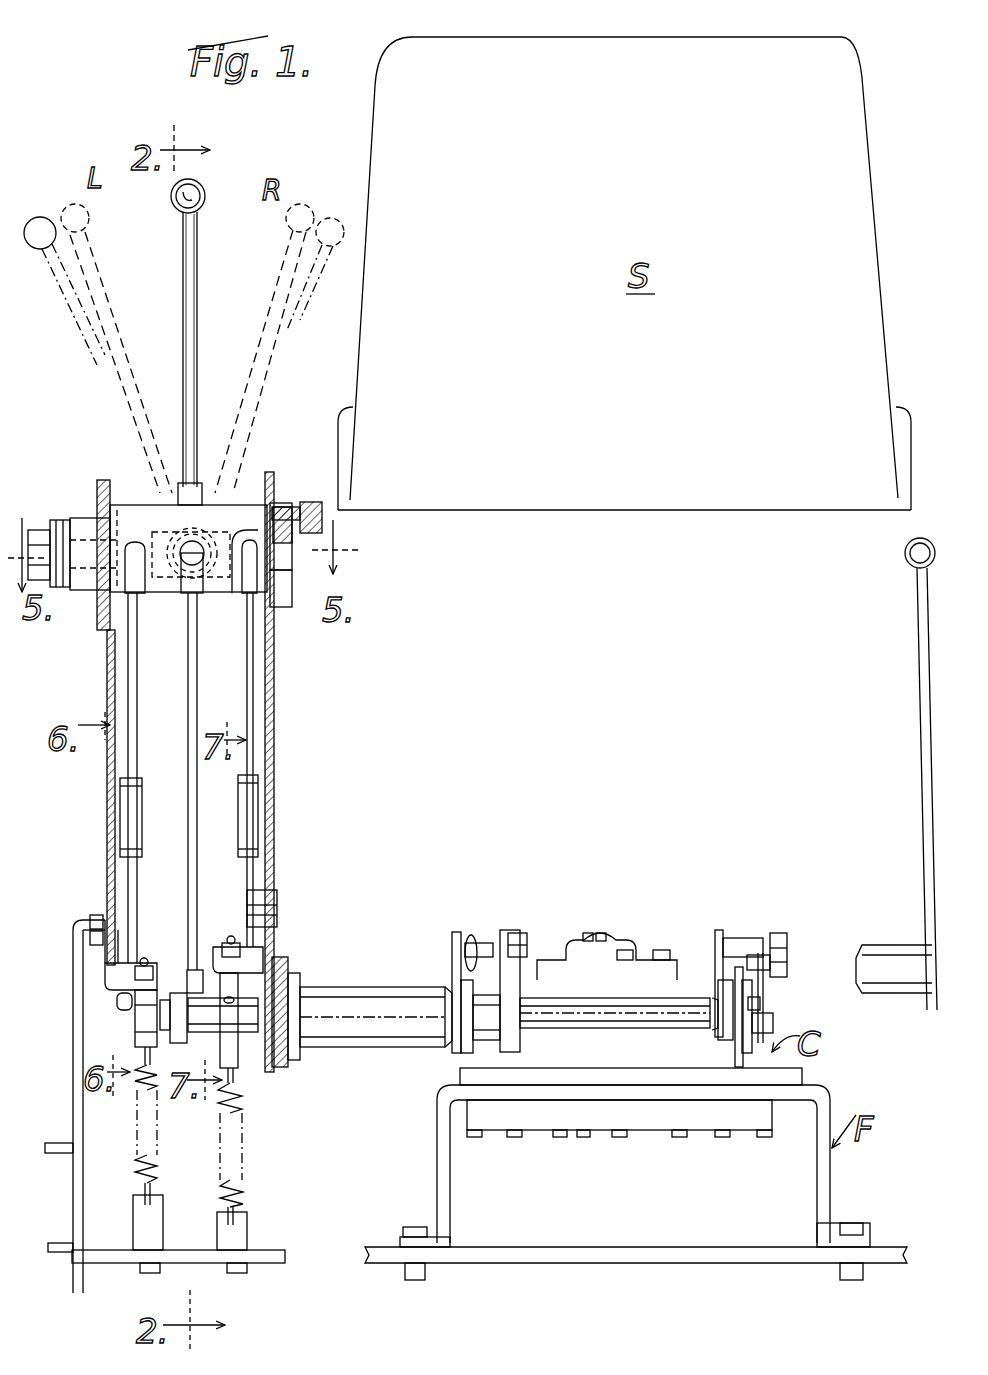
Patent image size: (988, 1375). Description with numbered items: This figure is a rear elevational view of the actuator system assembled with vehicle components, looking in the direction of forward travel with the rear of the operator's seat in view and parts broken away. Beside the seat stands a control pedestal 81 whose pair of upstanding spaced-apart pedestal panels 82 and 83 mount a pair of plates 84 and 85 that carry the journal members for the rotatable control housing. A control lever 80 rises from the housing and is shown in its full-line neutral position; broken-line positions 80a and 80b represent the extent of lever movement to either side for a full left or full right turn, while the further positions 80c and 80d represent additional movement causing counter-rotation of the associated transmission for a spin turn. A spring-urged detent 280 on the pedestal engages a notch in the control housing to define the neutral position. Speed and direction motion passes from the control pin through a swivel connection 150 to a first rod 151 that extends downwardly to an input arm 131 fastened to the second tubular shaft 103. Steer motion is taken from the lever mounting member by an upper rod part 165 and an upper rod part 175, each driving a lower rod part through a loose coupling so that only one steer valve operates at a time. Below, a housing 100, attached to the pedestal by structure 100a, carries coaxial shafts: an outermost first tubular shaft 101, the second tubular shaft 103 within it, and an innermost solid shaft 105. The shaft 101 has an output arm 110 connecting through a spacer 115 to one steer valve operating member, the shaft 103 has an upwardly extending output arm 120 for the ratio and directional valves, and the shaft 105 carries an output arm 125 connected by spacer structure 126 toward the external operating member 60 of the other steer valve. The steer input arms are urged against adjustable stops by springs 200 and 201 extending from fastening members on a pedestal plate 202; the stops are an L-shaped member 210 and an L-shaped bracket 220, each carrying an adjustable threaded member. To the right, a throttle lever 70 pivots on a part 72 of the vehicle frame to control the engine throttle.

The control lever 80 is at (190, 258).
The broken line position 80a is at (78, 204).
The broken line position 80b is at (303, 204).
The broken line position 80c is at (40, 216).
The broken line position 80d is at (344, 226).
The spring-urged detent 280 is at (286, 502).
The plate 84 is at (98, 608).
The pedestal panel 82 is at (104, 650).
The pedestal panel 83 is at (274, 680).
The plate 85 is at (272, 607).
The control pedestal 81 is at (274, 826).
The rod part 165 is at (137, 676).
The swivel connection 150 is at (205, 578).
The first rod 151 is at (192, 690).
The upper rod part 175 is at (255, 712).
The L-shaped member 210 is at (268, 900).
The L-shaped bracket 220 is at (105, 975).
The input arm 131 is at (178, 998).
The structure 100a is at (283, 968).
The housing 100 is at (348, 995).
The first tubular shaft 101 is at (480, 1047).
The output arm 110 is at (452, 968).
The spacer 115 is at (490, 942).
The output arm 120 is at (508, 932).
The second tubular shaft 103 is at (572, 1015).
The solid shaft 105 is at (720, 1030).
The output arm 125 is at (716, 935).
The spacer structure 126 is at (738, 945).
The external operating member 60 is at (760, 997).
The throttle lever 70 is at (922, 790).
The part of the vehicle frame 72 is at (872, 944).
The spring 201 is at (170, 1156).
The spring 200 is at (244, 1180).
The pedestal plate 202 is at (262, 1250).